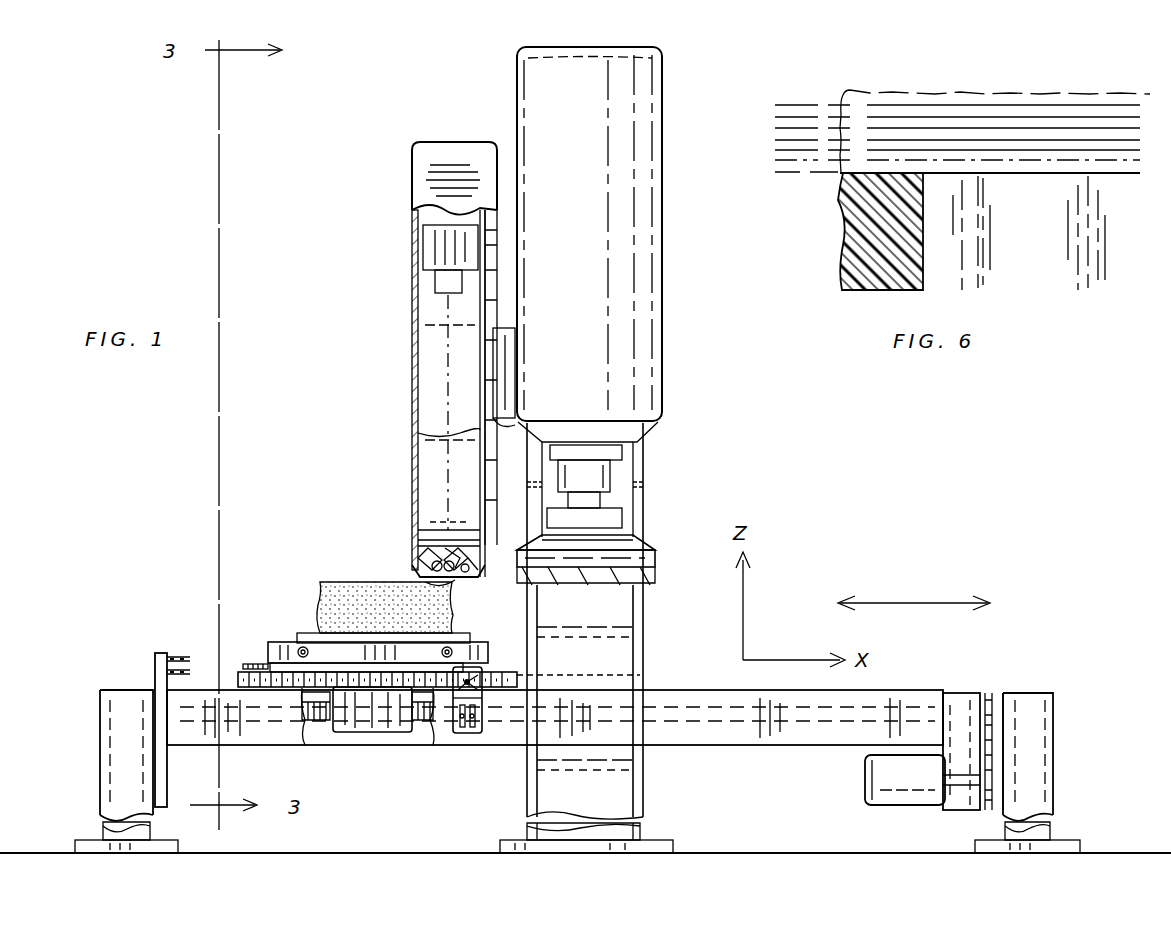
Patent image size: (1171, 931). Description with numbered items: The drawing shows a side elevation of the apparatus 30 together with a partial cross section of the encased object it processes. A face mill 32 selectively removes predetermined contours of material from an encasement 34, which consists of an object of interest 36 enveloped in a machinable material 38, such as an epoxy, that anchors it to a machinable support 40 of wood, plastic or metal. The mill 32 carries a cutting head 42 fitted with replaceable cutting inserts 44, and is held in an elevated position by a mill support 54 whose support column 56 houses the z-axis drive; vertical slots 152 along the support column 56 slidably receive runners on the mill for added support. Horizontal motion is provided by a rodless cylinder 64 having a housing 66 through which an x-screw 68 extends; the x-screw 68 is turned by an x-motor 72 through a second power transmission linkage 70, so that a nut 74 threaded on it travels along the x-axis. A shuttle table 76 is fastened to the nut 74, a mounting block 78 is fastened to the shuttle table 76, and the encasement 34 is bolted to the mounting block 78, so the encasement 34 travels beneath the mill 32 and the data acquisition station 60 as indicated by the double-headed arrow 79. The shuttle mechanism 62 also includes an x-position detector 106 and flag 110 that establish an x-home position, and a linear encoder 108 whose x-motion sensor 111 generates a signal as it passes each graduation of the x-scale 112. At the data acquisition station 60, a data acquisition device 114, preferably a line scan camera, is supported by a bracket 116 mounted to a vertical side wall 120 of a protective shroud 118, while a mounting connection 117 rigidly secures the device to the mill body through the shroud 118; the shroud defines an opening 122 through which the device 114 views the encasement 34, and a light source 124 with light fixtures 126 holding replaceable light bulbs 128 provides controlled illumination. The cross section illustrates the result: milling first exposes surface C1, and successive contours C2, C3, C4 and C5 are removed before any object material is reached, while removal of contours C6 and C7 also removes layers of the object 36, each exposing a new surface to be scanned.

In FIG. 1, the apparatus 30 is at (385, 170).
In FIG. 1, the face mill 32 is at (663, 345).
In FIG. 1, the encasement 34 is at (318, 600).
In FIG. 6, the encasement 34 is at (838, 277).
In FIG. 6, the object of interest 36 is at (1044, 232).
In FIG. 1, the machinable material 38 is at (320, 625).
In FIG. 6, the machinable material 38 is at (853, 240).
In FIG. 1, the machinable support 40 is at (297, 640).
In FIG. 1, the cutting head 42 is at (645, 540).
In FIG. 1, the replaceable cutting inserts 44 is at (590, 585).
In FIG. 1, the mill support 54 is at (648, 762).
In FIG. 1, the support column 56 is at (645, 800).
In FIG. 1, the data acquisition station 60 is at (452, 142).
In FIG. 1, the shuttle mechanism 62 is at (268, 648).
In FIG. 1, the rodless cylinder 64 is at (763, 750).
In FIG. 1, the housing 66 is at (830, 735).
In FIG. 1, the x-screw 68 is at (325, 722).
In FIG. 1, the second power transmission linkage 70 is at (965, 810).
In FIG. 1, the x-motor 72 is at (865, 785).
In FIG. 1, the nut 74 is at (428, 735).
In FIG. 1, the shuttle table 76 is at (292, 668).
In FIG. 1, the mounting block 78 is at (318, 590).
In FIG. 1, the double-headed arrow 79 is at (912, 600).
In FIG. 1, the x-position detector 106 is at (155, 660).
In FIG. 1, the linear encoder 108 is at (497, 672).
In FIG. 1, the flag 110 is at (255, 668).
In FIG. 1, the x-motion sensor 111 is at (470, 747).
In FIG. 1, the x-scale 112 is at (470, 740).
In FIG. 1, the data acquisition device 114 is at (430, 243).
In FIG. 1, the bracket 116 is at (448, 262).
In FIG. 1, the mounting connection 117 is at (440, 433).
In FIG. 1, the protective shroud 118 is at (410, 342).
In FIG. 1, the vertical side wall 120 is at (410, 390).
In FIG. 1, the shroud opening 122 is at (455, 585).
In FIG. 1, the light source 124 is at (465, 530).
In FIG. 1, the light fixtures 126 is at (425, 555).
In FIG. 1, the replaceable light bulbs 128 is at (420, 575).
In FIG. 1, the vertical slots 152 is at (610, 678).
In FIG. 6, the surface C1 is at (793, 105).
In FIG. 6, the layer C2 is at (772, 105).
In FIG. 6, the layer C3 is at (772, 117).
In FIG. 6, the layer C4 is at (772, 128).
In FIG. 6, the layer C5 is at (772, 140).
In FIG. 6, the contour C6 is at (772, 150).
In FIG. 6, the contour C7 is at (790, 170).